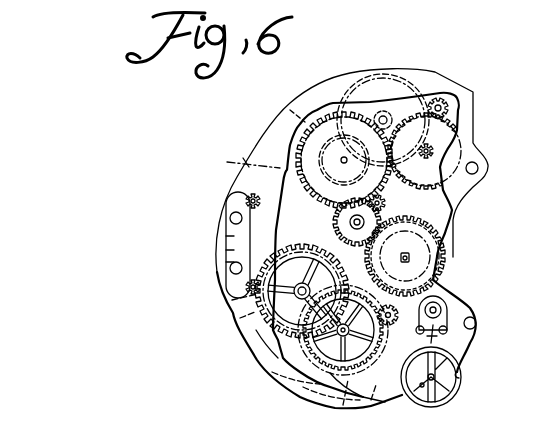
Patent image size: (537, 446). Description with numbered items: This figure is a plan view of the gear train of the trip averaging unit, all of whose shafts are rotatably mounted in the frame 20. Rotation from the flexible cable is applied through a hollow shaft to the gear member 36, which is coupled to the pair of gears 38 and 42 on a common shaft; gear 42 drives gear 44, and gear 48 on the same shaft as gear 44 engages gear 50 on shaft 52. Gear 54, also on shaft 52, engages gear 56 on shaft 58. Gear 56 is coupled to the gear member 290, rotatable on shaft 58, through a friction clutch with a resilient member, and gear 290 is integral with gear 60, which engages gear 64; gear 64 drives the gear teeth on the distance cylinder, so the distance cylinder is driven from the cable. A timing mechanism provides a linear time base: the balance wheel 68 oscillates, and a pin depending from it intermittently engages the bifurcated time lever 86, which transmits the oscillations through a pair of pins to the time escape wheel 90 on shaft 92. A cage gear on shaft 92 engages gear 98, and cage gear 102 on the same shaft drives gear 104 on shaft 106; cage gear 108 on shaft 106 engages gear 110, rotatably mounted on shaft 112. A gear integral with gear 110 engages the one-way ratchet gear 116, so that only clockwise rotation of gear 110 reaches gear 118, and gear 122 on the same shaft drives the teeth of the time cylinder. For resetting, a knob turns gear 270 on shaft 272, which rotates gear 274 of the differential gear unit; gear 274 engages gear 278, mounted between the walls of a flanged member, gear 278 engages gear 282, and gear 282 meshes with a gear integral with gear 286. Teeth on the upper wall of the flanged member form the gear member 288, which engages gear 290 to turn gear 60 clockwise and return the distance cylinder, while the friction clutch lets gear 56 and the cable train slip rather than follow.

The frame 20 is at (437, 73).
The gear member 36 is at (443, 117).
The gear 38 is at (445, 148).
The gear 42 is at (442, 134).
The gear 44 is at (350, 93).
The gear 48 is at (397, 100).
The gear 50 is at (290, 110).
The shaft 52 is at (341, 160).
The gear 54 is at (294, 139).
The gear 56 is at (243, 158).
The shaft 58 is at (249, 198).
The gear 60 is at (241, 159).
The gear 64 is at (240, 201).
The balance wheel 68 is at (460, 400).
The time lever 86 is at (472, 342).
The time escape wheel 90 is at (457, 296).
The shaft 92 is at (460, 308).
The gear 98 is at (371, 400).
The cage gear 102 is at (343, 405).
The gear 104 is at (290, 375).
The shaft 106 is at (343, 330).
The cage gear 108 is at (303, 387).
The gear 110 is at (278, 358).
The shaft 112 is at (300, 293).
The one-way ratchet gear 116 is at (272, 372).
The gear 118 is at (232, 300).
The gear 122 is at (240, 318).
The gear 270 is at (447, 276).
The shaft 272 is at (410, 260).
The gear 274 is at (226, 262).
The gear 278 is at (397, 192).
The gear 282 is at (412, 208).
The gear 286 is at (418, 228).
The gear member 288 is at (226, 250).
The gear member 290 is at (226, 236).